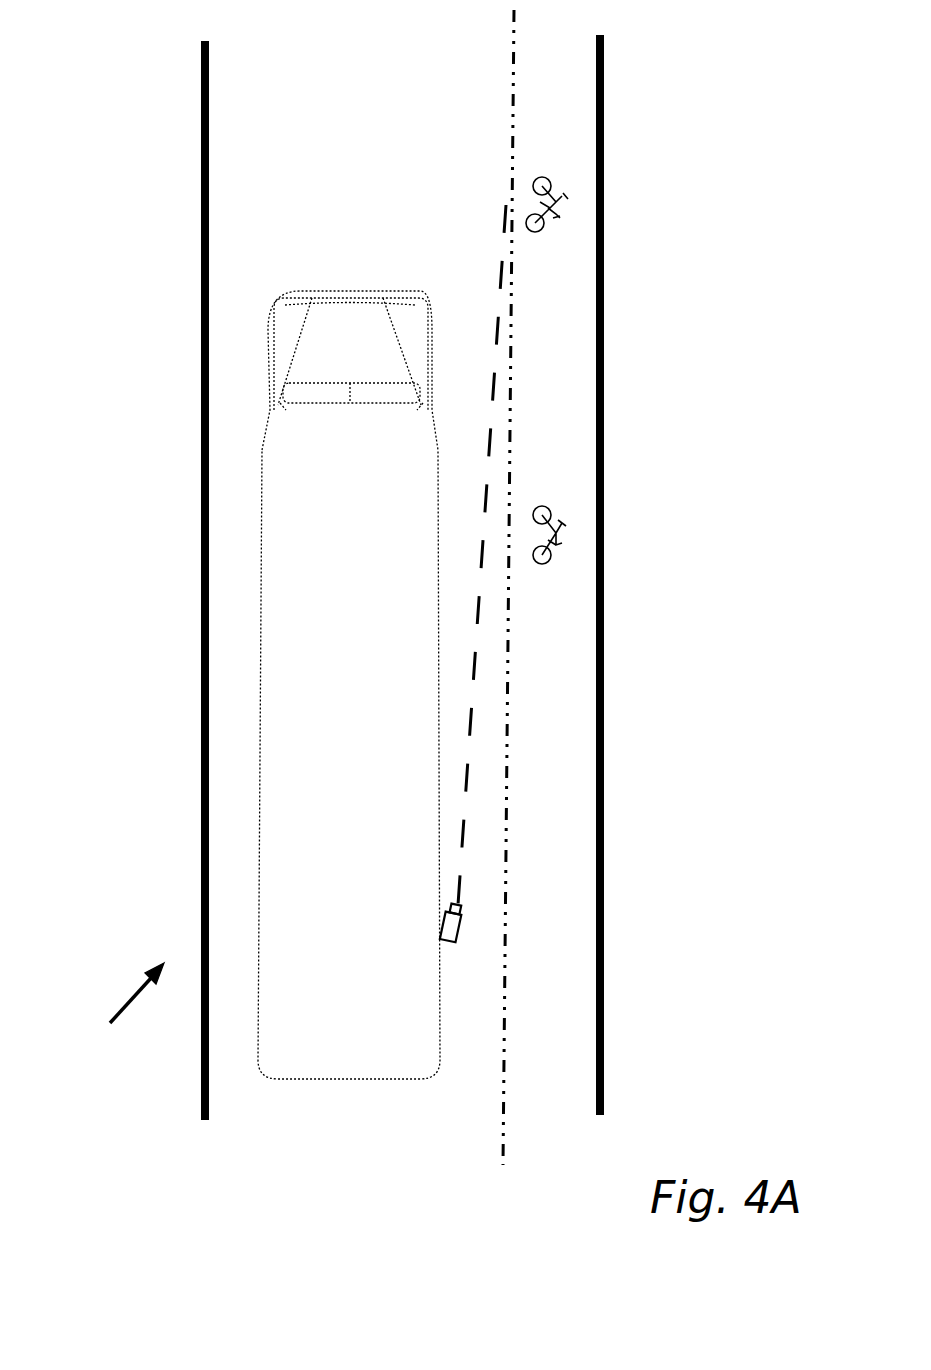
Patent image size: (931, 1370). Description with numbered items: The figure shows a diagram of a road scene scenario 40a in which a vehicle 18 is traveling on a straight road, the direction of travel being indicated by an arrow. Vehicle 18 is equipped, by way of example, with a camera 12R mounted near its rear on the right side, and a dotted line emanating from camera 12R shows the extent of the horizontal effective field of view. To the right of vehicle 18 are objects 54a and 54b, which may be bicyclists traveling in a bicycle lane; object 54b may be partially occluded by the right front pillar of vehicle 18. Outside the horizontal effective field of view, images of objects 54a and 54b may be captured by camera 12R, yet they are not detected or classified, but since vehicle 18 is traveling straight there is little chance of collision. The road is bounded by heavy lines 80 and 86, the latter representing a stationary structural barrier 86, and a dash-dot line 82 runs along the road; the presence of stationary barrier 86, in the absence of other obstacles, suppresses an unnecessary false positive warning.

The left road edge line 80 is at (200, 246).
The road center line 82 is at (513, 58).
The structural barrier 86 is at (604, 1006).
The object 54a is at (570, 542).
The object 54b is at (569, 212).
The camera 12R is at (453, 947).
The vehicle 18 is at (425, 1075).
The road scene scenario 40a is at (114, 1006).